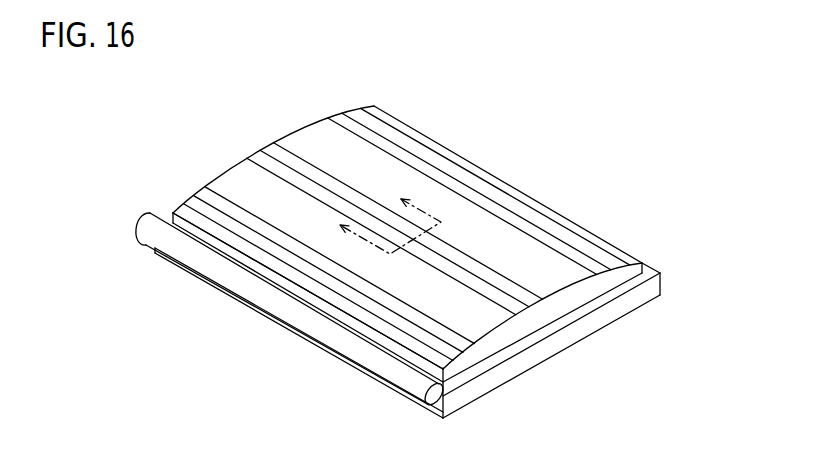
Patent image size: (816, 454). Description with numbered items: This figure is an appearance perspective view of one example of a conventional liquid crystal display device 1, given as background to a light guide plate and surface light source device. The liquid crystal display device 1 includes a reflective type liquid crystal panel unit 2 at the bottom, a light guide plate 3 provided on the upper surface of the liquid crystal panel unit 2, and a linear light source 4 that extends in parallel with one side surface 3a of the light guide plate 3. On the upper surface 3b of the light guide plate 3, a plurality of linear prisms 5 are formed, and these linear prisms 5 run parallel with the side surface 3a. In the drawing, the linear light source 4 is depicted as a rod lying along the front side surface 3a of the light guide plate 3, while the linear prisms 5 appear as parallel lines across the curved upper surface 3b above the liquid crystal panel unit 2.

The liquid crystal display device 1 is at (408, 81).
The reflective type liquid crystal panel unit 2 is at (556, 347).
The light guide plate 3 is at (407, 235).
The side surface 3a is at (258, 270).
The upper surface 3b is at (307, 139).
The linear light source 4 is at (293, 312).
The linear prisms 5 is at (220, 198).